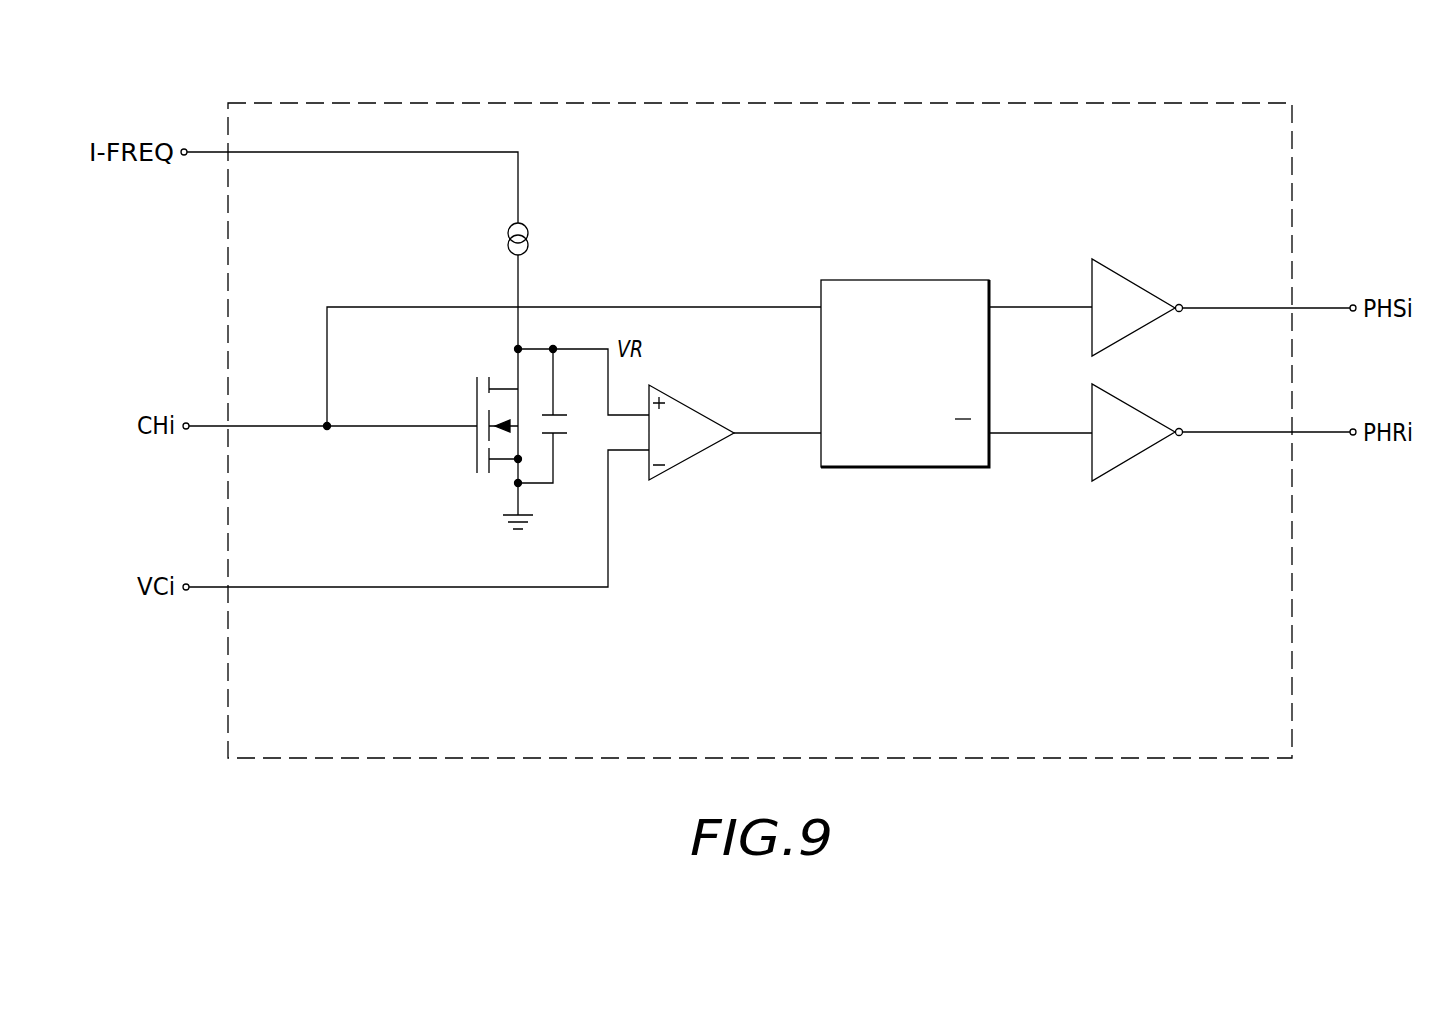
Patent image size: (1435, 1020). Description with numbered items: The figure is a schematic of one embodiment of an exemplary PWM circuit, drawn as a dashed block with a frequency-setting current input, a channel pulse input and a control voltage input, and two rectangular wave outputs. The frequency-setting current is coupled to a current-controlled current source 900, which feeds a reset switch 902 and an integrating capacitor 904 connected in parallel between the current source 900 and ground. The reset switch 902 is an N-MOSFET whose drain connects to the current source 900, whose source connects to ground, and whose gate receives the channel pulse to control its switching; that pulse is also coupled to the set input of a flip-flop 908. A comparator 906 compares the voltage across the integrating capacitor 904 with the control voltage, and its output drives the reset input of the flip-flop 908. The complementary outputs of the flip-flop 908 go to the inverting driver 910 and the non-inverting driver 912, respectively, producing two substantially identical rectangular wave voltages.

The current-controlled current source 900 is at (508, 228).
The reset switch 902 is at (502, 483).
The integrating capacitor 904 is at (570, 427).
The comparator 906 is at (697, 455).
The flip-flop 908 is at (925, 469).
The inverting driver 910 is at (1153, 320).
The non-inverting driver 912 is at (1148, 449).